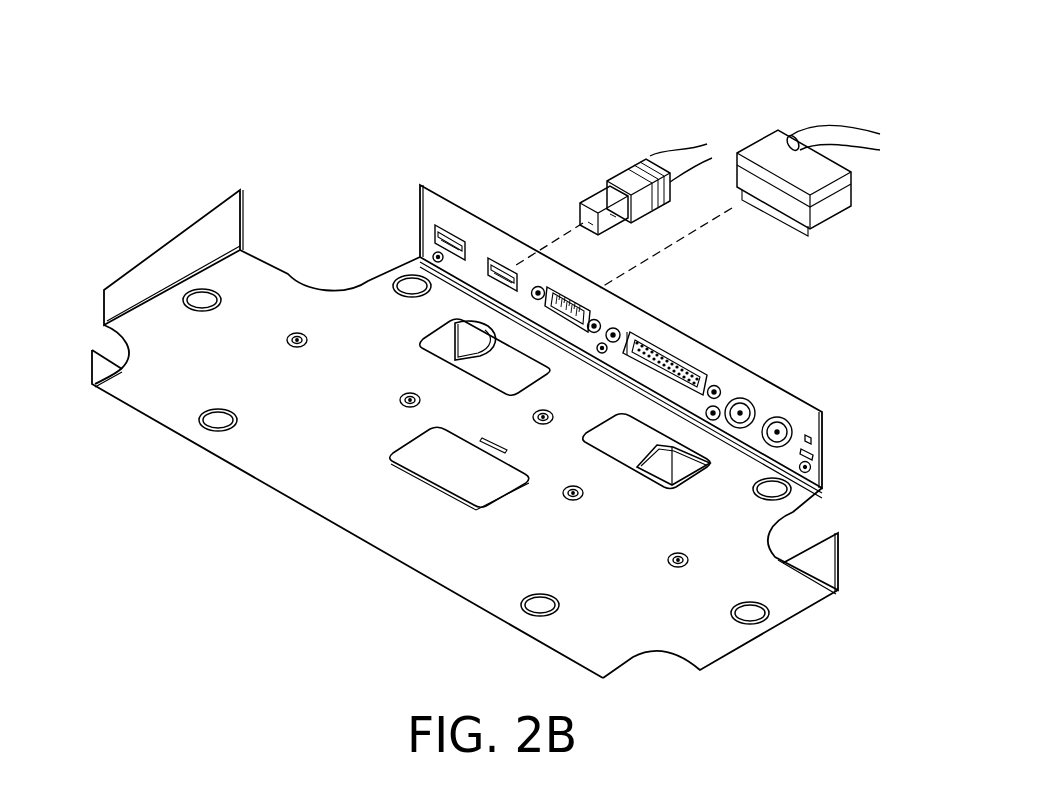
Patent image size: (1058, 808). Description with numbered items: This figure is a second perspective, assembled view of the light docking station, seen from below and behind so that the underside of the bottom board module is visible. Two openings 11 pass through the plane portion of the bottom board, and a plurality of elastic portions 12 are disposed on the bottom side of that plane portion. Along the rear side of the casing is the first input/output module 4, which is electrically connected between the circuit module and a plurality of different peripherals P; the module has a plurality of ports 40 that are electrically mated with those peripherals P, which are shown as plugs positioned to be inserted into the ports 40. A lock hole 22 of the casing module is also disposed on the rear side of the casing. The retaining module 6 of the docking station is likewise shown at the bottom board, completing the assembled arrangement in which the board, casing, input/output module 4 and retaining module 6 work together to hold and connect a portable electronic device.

The first input/output module 4 is at (670, 338).
The retaining module 6 is at (626, 458).
The openings 11 is at (470, 340).
The elastic portions 12 is at (200, 295).
The lock hole 22 is at (810, 450).
The ports 40 is at (707, 374).
The peripherals P is at (667, 158).